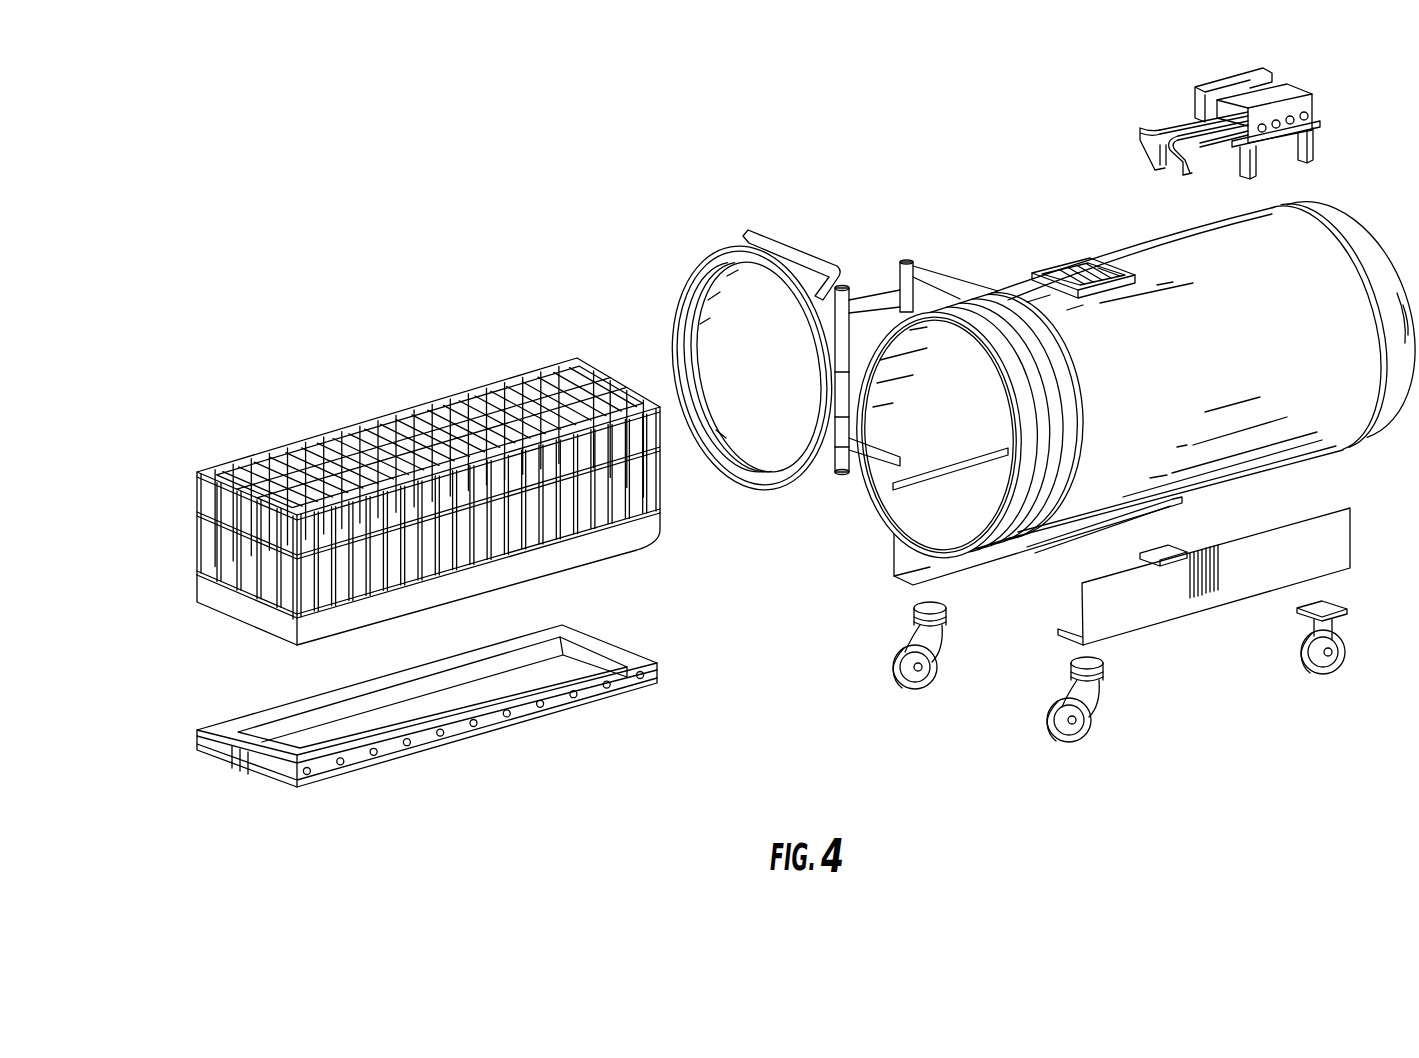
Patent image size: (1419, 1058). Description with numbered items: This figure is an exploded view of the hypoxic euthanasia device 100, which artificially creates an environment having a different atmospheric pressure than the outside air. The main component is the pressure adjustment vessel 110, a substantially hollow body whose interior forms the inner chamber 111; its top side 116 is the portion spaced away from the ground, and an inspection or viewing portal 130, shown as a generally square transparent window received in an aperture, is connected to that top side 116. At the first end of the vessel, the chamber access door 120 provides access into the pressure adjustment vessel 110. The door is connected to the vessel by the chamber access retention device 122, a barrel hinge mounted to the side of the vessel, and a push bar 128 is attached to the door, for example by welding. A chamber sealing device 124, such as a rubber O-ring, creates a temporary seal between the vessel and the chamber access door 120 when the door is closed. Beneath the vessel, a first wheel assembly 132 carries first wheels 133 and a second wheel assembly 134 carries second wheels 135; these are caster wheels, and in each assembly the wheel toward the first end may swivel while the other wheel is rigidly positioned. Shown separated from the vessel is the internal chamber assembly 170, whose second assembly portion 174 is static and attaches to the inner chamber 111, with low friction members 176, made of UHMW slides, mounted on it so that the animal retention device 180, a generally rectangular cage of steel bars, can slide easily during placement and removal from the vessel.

The hypoxic euthanasia device 100 is at (926, 202).
The pressure adjustment vessel 110 is at (1353, 408).
The inner chamber 111 is at (892, 450).
The top side 116 is at (1198, 248).
The chamber access door 120 is at (783, 262).
The chamber access retention device 122 is at (835, 436).
The chamber sealing device 124 is at (1013, 522).
The push bar 128 is at (805, 254).
The inspection or viewing portal 130 is at (1075, 265).
The first wheel assembly 132 is at (893, 552).
The first wheels 133 is at (895, 668).
The second wheel assembly 134 is at (1132, 632).
The second wheels 135 is at (1046, 716).
The internal chamber assembly 170 is at (187, 742).
The second assembly portion 174 is at (652, 655).
The low friction members 176 is at (268, 715).
The animal retention device 180 is at (195, 600).